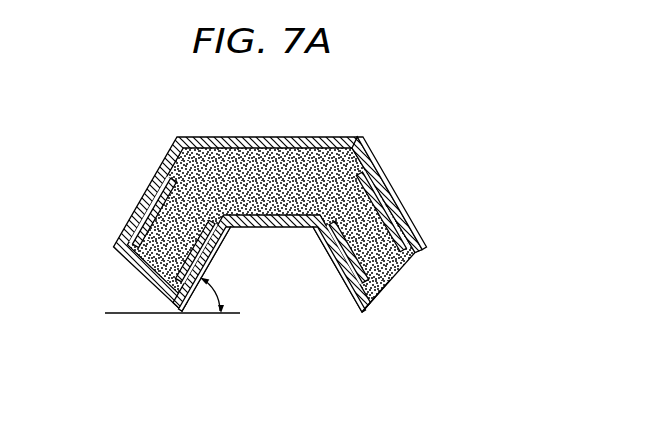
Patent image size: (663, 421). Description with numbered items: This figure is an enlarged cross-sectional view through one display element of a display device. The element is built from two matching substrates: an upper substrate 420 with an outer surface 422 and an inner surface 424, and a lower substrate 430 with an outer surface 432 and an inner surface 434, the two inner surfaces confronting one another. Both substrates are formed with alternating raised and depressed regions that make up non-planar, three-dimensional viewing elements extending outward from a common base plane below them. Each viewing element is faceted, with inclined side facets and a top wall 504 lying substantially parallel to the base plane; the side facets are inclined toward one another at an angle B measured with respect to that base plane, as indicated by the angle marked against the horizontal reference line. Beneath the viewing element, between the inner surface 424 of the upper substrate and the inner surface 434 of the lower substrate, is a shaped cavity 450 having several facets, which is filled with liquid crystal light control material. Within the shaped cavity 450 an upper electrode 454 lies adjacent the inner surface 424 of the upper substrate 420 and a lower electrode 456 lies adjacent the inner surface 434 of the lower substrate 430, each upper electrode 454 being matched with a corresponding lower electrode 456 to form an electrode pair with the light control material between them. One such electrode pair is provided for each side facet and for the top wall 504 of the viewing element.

The top wall 504 is at (242, 137).
The shaped cavity 450 is at (200, 173).
The upper electrode 454 is at (378, 172).
The outer surface 422 is at (402, 200).
The upper substrate 420 is at (416, 235).
The inner surface 424 is at (405, 265).
The inner surface 434 is at (380, 294).
The outer surface 432 is at (343, 292).
The lower substrate 430 is at (362, 309).
The lower electrode 456 is at (337, 247).
The angle beta B is at (172, 294).